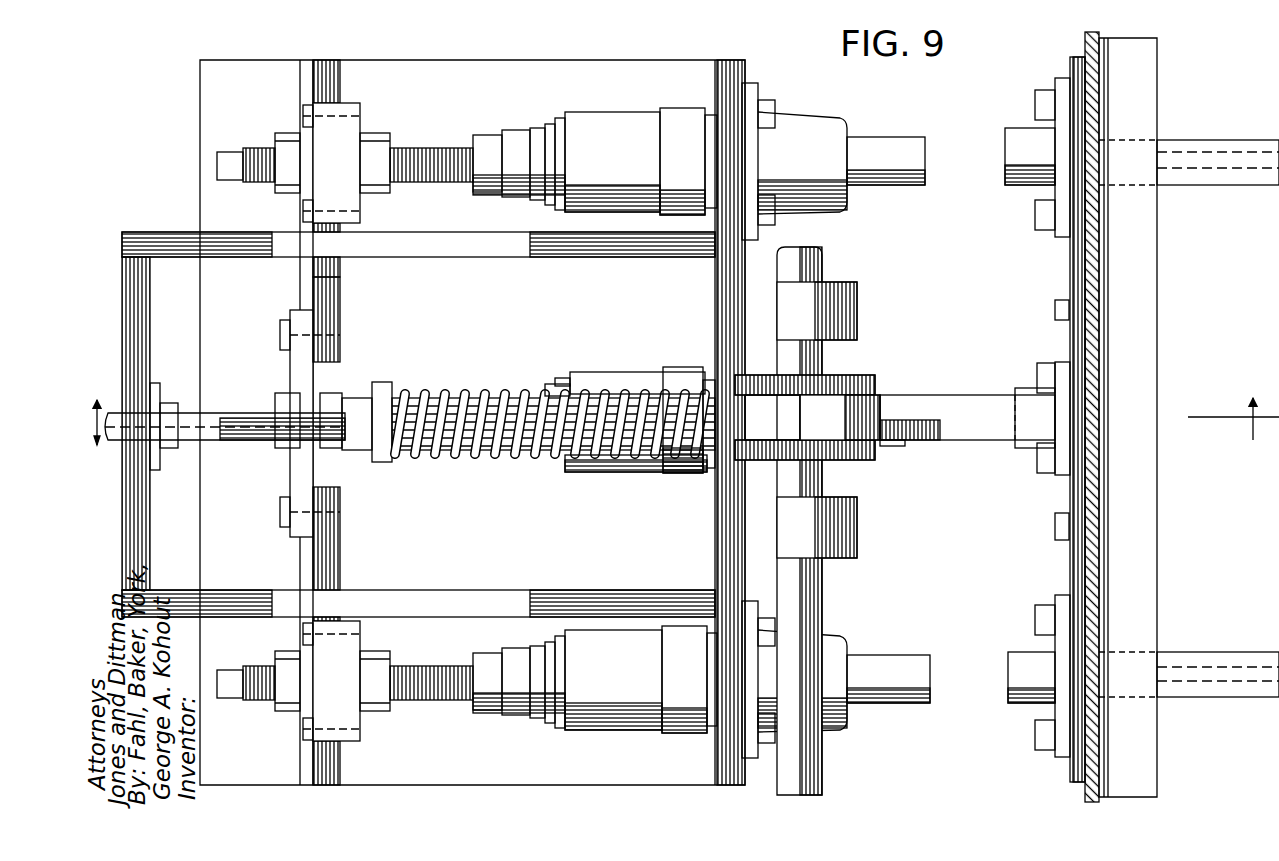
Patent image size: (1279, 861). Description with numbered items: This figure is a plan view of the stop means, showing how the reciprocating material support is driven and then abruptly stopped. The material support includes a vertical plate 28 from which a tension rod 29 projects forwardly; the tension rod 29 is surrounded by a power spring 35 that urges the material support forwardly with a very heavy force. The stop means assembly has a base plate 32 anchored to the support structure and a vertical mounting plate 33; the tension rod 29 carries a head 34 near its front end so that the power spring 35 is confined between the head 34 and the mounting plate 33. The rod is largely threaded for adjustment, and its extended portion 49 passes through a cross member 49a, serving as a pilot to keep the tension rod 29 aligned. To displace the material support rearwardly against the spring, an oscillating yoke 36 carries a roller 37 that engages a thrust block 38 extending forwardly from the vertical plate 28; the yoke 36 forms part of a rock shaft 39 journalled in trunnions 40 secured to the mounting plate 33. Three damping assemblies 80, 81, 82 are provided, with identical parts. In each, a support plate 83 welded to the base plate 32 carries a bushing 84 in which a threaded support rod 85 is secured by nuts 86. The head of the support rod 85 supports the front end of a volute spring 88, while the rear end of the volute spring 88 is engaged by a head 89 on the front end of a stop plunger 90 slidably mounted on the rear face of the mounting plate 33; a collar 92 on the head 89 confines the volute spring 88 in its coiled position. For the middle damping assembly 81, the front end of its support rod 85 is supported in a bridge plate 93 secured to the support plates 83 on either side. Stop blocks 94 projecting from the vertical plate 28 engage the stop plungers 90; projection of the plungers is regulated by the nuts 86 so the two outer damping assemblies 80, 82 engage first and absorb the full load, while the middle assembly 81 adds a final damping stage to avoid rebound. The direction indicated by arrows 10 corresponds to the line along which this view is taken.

The direction of movement arrow 10 is at (683, 436).
The vertical plate 28 is at (1080, 548).
The tension rod 29 is at (318, 441).
The base plate 32 is at (522, 770).
The vertical mounting plate 33 is at (745, 72).
The head 34 is at (388, 393).
The power spring 35 is at (466, 388).
The oscillating yoke 36 is at (868, 378).
The roller 37 is at (875, 405).
The thrust block 38 is at (955, 402).
The rock shaft 39 is at (823, 775).
The trunnions 40 is at (857, 298).
The extended portion 49 is at (188, 412).
The cross member 49a is at (136, 335).
The damping assembly 80 is at (587, 732).
The middle damping assembly 81 is at (600, 474).
The damping assembly 82 is at (598, 112).
The support plate 83 is at (340, 302).
The bushing 84 is at (362, 634).
The support rod 85 is at (432, 150).
The nuts 86 is at (287, 133).
The volute spring 88 is at (615, 356).
The head 89 is at (708, 115).
The stop plunger 90 is at (905, 180).
The collar 92 is at (680, 356).
The bridge plate 93 is at (300, 483).
The stop blocks 94 is at (1005, 182).